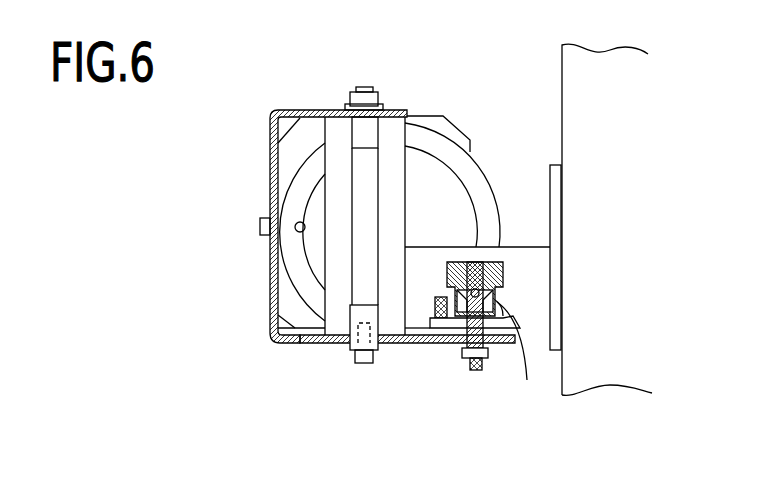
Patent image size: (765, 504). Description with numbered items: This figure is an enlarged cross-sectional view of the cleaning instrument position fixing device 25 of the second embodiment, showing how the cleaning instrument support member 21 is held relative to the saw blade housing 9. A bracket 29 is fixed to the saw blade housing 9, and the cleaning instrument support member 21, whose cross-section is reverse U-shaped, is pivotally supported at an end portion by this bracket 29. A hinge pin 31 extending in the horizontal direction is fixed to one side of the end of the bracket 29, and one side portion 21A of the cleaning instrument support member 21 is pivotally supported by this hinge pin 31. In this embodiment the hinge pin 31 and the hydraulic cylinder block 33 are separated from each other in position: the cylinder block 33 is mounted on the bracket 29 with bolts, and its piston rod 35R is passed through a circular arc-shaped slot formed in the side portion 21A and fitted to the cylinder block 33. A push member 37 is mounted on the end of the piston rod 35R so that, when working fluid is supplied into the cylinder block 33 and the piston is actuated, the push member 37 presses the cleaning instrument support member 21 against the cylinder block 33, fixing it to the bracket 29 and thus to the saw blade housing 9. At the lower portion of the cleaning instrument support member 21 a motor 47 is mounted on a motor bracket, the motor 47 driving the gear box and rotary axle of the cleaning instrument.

The saw blade housing 9 is at (591, 67).
The cleaning instrument support member 21 is at (264, 160).
The one side portion of the cleaning instrument support member 21A is at (315, 344).
The cleaning instrument position fixing device 25 is at (518, 273).
The bracket 29 is at (531, 247).
The hinge pin 31 is at (362, 138).
The cylinder block 33 is at (503, 303).
The piston rod 35R is at (527, 380).
The push member 37 is at (481, 350).
The motor 47 is at (438, 142).